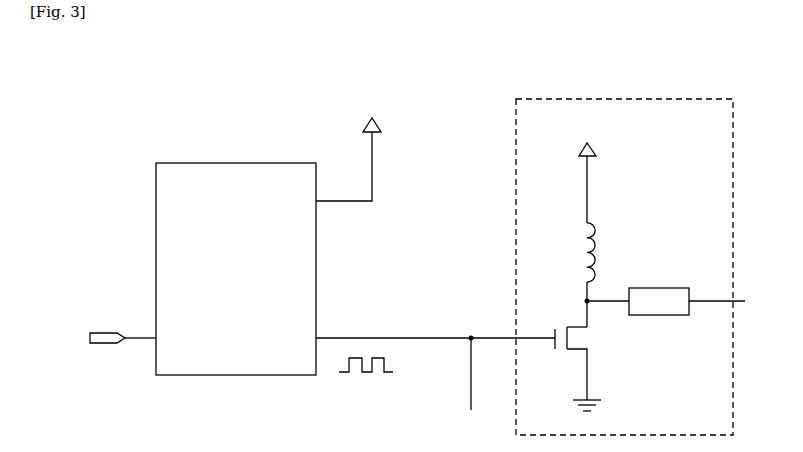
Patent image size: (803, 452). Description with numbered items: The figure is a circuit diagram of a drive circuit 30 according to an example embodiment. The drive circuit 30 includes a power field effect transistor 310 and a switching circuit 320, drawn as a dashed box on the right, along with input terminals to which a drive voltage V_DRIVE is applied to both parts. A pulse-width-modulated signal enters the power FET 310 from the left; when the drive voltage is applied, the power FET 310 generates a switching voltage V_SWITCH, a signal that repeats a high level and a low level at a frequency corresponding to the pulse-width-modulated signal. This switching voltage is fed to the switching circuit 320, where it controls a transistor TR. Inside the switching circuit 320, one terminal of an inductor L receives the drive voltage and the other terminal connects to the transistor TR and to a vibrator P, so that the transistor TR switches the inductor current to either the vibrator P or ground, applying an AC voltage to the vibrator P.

The drive circuit 30 is at (161, 48).
The power field effect transistor 310 is at (237, 163).
The switching circuit 320 is at (624, 99).